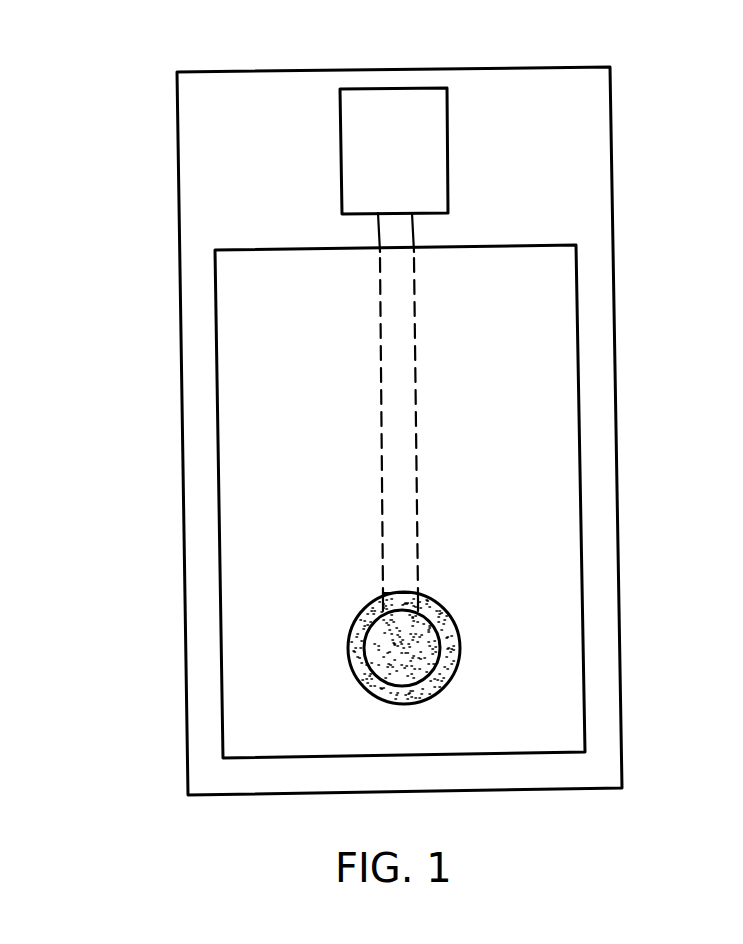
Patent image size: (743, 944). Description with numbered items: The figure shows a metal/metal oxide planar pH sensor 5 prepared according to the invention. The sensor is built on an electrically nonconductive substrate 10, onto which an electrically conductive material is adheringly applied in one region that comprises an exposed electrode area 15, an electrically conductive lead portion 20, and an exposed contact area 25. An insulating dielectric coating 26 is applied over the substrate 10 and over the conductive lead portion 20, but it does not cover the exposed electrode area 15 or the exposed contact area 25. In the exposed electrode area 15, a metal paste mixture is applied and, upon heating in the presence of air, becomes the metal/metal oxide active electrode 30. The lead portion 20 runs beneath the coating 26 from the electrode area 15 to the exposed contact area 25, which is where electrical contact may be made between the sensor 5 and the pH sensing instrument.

The pH sensor 5 is at (650, 108).
The electrically nonconductive substrate 10 is at (621, 724).
The exposed electrode area 15 is at (367, 637).
The electrically conductive lead portion 20 is at (381, 446).
The exposed contact area 25 is at (411, 156).
The insulating dielectric coating 26 is at (514, 337).
The metal/metal oxide active electrode 30 is at (458, 611).